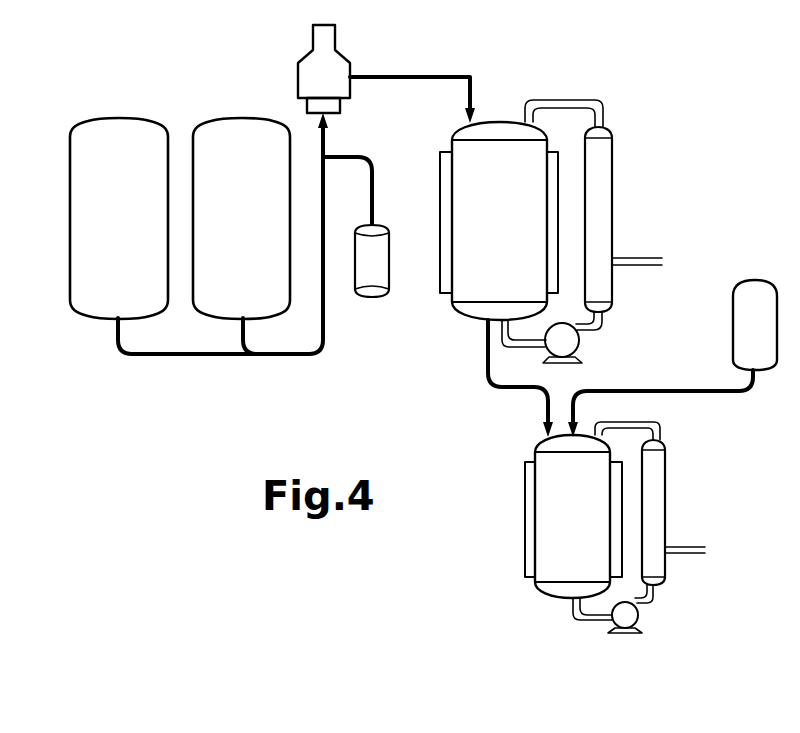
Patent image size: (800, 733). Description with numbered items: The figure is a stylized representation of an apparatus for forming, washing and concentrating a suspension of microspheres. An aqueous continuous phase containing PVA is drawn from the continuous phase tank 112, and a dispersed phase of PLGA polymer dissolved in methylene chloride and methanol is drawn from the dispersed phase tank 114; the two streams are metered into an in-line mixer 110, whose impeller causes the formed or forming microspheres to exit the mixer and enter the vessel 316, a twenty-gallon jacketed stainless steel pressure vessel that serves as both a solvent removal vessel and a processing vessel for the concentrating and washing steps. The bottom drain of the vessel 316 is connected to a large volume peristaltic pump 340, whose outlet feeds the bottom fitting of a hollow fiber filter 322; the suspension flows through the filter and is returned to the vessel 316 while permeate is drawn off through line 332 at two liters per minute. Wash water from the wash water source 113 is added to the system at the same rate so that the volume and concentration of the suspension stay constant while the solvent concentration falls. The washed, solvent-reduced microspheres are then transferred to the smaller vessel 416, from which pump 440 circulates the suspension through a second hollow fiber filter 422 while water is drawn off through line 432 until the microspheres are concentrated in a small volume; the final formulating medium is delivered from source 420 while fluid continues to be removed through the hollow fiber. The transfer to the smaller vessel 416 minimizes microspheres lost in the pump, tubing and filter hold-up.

The mixing valve / feed unit 110 is at (332, 60).
The continuous phase tank 112 is at (117, 140).
The wash water source 113 is at (233, 146).
The dispersed phase tank 114 is at (372, 273).
The vessel 316 is at (493, 150).
The hollow fiber filter 322 is at (597, 187).
The line 332 is at (640, 256).
The peristaltic pump 340 is at (580, 343).
The smaller vessel 416 is at (556, 512).
The supply tank 420 is at (765, 306).
The second hollow fiber filter 422 is at (655, 490).
The second outlet line 432 is at (685, 553).
The pump 440 is at (626, 615).